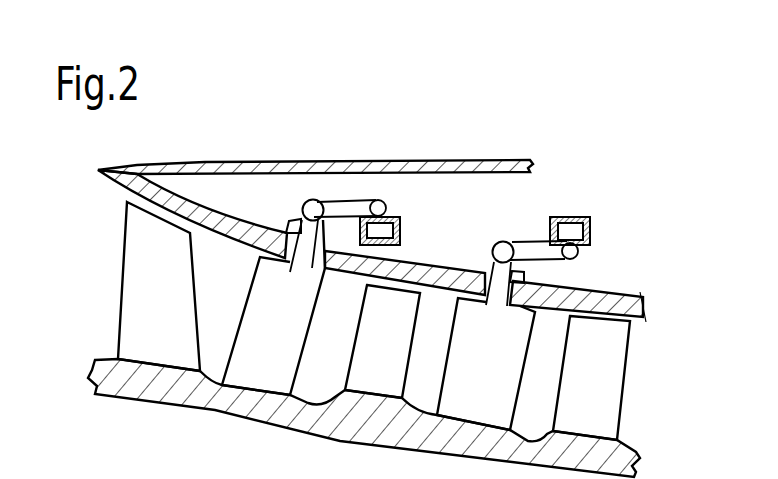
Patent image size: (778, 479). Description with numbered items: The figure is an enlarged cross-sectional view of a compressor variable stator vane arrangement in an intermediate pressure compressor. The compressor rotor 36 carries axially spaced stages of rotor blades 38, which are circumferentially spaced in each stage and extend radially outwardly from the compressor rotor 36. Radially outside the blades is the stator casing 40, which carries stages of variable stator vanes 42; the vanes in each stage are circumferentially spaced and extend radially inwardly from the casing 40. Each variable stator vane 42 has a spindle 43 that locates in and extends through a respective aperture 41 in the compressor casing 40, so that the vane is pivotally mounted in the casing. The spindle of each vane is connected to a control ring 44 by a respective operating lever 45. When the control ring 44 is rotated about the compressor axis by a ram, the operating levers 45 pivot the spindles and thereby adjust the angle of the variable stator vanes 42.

The compressor rotor 36 is at (230, 413).
The rotor blades 38 is at (168, 326).
The stator casing 40 is at (630, 305).
The aperture 41 is at (292, 223).
The variable stator vanes 42 is at (277, 371).
The spindle 43 is at (308, 240).
The control ring 44 is at (400, 230).
The operating levers 45 is at (350, 206).